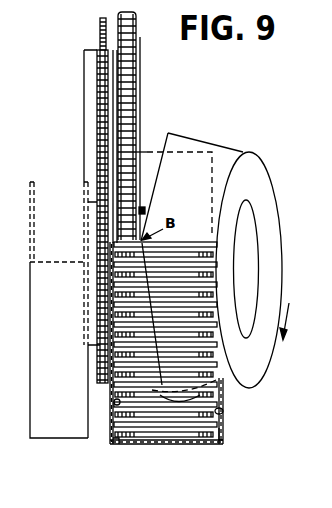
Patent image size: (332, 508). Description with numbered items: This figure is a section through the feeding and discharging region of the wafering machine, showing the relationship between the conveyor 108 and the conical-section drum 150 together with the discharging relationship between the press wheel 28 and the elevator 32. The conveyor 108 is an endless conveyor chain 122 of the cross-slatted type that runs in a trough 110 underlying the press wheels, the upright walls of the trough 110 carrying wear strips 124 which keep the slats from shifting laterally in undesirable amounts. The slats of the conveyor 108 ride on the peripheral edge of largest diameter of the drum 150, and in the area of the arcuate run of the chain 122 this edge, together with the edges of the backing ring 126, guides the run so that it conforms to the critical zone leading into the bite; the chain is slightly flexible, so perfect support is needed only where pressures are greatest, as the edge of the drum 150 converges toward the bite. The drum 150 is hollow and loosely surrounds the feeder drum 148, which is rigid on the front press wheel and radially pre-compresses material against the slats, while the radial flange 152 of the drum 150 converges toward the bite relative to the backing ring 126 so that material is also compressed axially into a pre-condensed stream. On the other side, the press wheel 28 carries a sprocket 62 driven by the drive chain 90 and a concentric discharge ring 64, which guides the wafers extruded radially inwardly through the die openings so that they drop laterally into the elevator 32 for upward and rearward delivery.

The press wheel 28 is at (137, 16).
The elevator 32 is at (33, 182).
The sprocket 62 is at (100, 20).
The discharge ring 64 is at (84, 81).
The drive chain 90 is at (97, 100).
The conveyor 108 is at (223, 434).
The trough 110 is at (169, 444).
The endless conveyor chain 122 is at (120, 444).
The wear strips 124 is at (110, 441).
The backing ring 126 is at (114, 403).
The feeder drum 148 is at (148, 152).
The drum 150 is at (240, 152).
The radial flange 152 is at (168, 133).